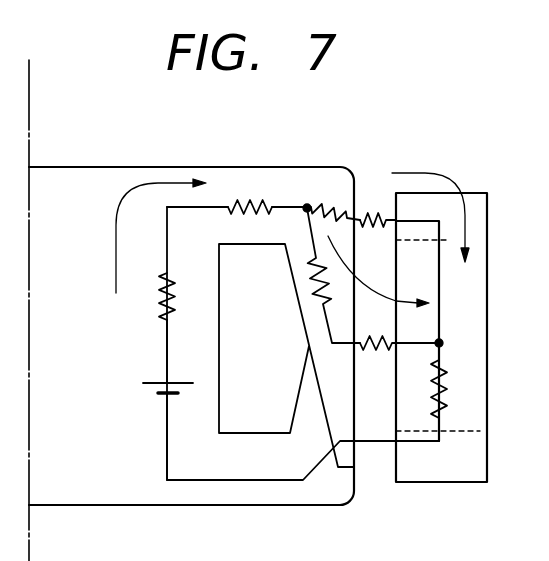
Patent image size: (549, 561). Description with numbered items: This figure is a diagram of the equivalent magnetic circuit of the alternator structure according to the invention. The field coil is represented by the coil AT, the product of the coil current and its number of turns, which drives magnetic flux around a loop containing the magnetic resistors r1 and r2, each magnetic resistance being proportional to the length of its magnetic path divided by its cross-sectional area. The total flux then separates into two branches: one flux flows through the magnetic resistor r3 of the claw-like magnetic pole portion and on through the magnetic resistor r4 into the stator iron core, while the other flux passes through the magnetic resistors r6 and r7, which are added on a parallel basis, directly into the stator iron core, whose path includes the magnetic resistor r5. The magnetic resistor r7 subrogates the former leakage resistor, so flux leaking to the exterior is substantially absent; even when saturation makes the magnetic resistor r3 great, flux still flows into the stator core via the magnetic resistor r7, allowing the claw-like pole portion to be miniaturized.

The magnetic resistor r1 is at (182, 296).
The magnetic resistor r2 is at (256, 198).
The magnetic resistor r3 is at (312, 296).
The magnetic resistor r4 is at (401, 358).
The magnetic resistor r5 is at (451, 392).
The magnetic resistor r6 is at (335, 200).
The magnetic resistor r7 is at (378, 210).
The coil AT is at (147, 400).